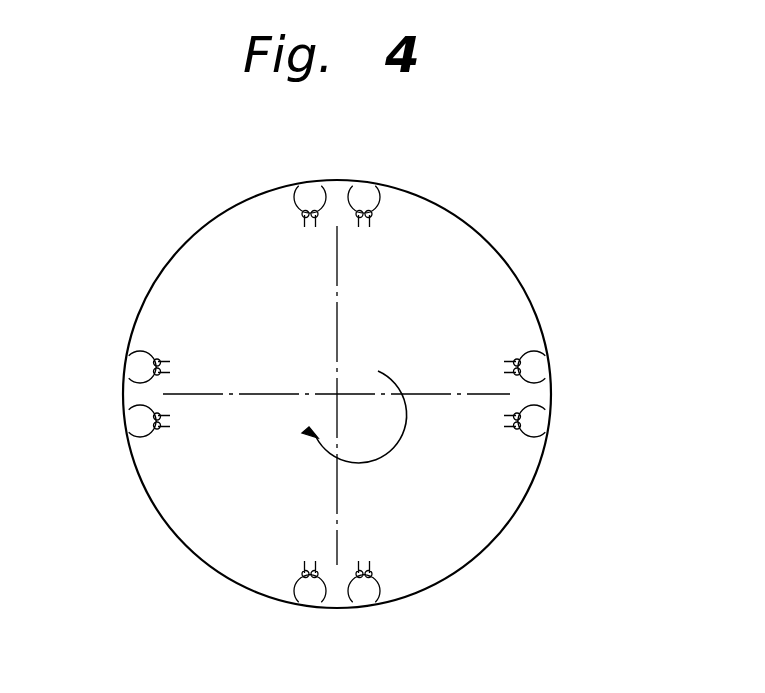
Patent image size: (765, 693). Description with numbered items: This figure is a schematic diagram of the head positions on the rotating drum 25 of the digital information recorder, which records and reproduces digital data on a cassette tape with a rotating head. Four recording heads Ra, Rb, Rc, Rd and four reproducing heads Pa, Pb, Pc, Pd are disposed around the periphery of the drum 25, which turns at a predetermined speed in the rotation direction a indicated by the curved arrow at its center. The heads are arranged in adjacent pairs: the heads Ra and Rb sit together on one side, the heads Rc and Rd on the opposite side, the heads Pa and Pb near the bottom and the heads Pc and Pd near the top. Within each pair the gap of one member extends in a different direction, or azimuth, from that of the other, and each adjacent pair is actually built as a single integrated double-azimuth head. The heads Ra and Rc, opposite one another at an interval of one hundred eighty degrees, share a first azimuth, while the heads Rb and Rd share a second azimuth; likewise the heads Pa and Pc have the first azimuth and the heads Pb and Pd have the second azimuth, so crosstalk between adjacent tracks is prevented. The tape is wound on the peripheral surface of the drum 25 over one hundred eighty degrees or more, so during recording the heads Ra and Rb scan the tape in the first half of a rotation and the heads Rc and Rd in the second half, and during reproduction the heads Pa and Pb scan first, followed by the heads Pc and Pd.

The drum 25 is at (507, 258).
The rotation direction a is at (354, 417).
The reproducing head Pa is at (393, 598).
The reproducing head Pb is at (292, 598).
The reproducing head Pc is at (293, 200).
The reproducing head Pd is at (378, 200).
The recording head Ra is at (137, 438).
The recording head Rb is at (137, 348).
The recording head Rc is at (540, 348).
The recording head Rd is at (537, 438).